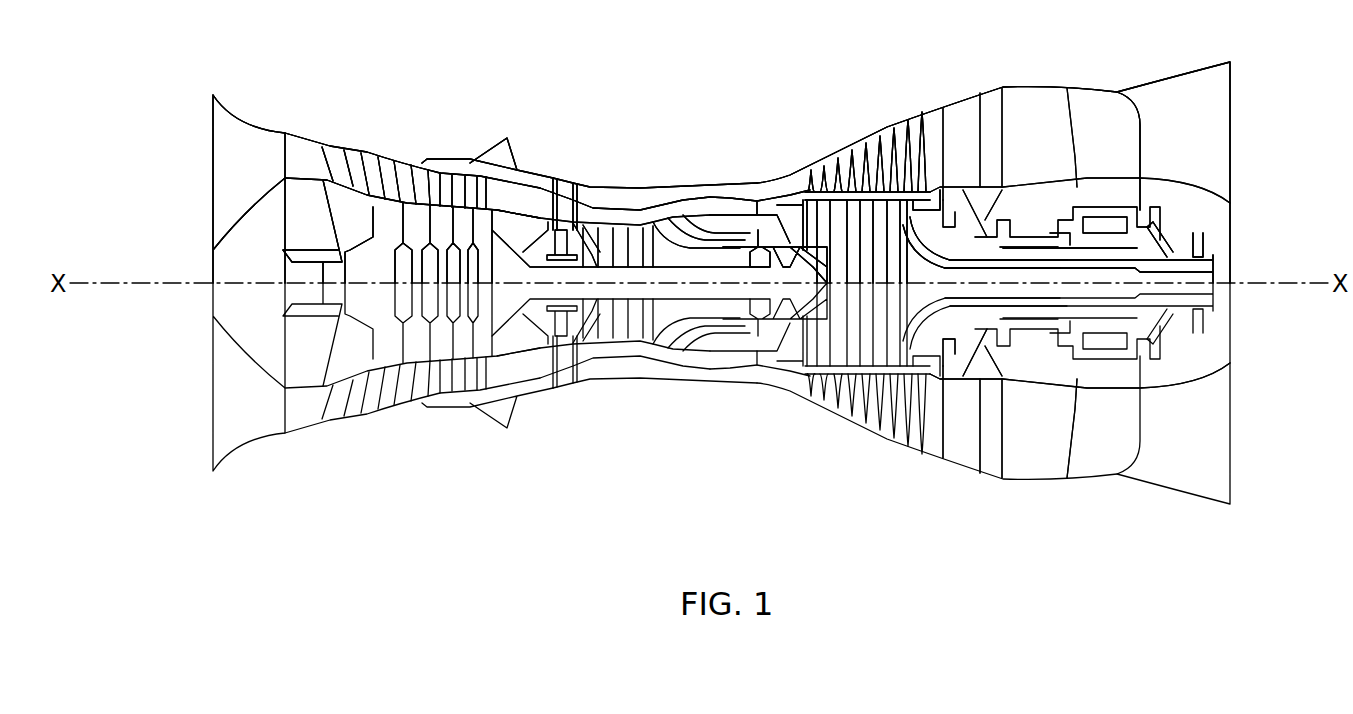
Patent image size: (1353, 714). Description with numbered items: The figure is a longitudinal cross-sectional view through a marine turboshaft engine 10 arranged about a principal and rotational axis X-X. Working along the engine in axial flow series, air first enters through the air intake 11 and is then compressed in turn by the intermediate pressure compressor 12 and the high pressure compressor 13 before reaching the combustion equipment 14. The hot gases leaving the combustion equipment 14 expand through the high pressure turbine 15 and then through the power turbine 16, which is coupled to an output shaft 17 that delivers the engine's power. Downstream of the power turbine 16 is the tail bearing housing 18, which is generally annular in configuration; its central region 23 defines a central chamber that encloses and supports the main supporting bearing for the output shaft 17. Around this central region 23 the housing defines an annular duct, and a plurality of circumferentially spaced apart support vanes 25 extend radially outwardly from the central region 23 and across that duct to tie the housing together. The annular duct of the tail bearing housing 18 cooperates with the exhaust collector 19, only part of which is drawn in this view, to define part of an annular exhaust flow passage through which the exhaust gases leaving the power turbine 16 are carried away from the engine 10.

The marine turboshaft engine 10 is at (150, 130).
The air intake 11 is at (287, 131).
The intermediate pressure compressor 12 is at (420, 172).
The high pressure compressor 13 is at (596, 216).
The combustion equipment 14 is at (712, 203).
The high pressure turbine 15 is at (768, 197).
The power turbine 16 is at (885, 160).
The output shaft 17 is at (1133, 272).
The tail bearing housing 18 is at (1032, 85).
The exhaust collector 19 is at (1120, 90).
The central region 23 is at (1030, 380).
The support vanes 25 is at (1043, 455).